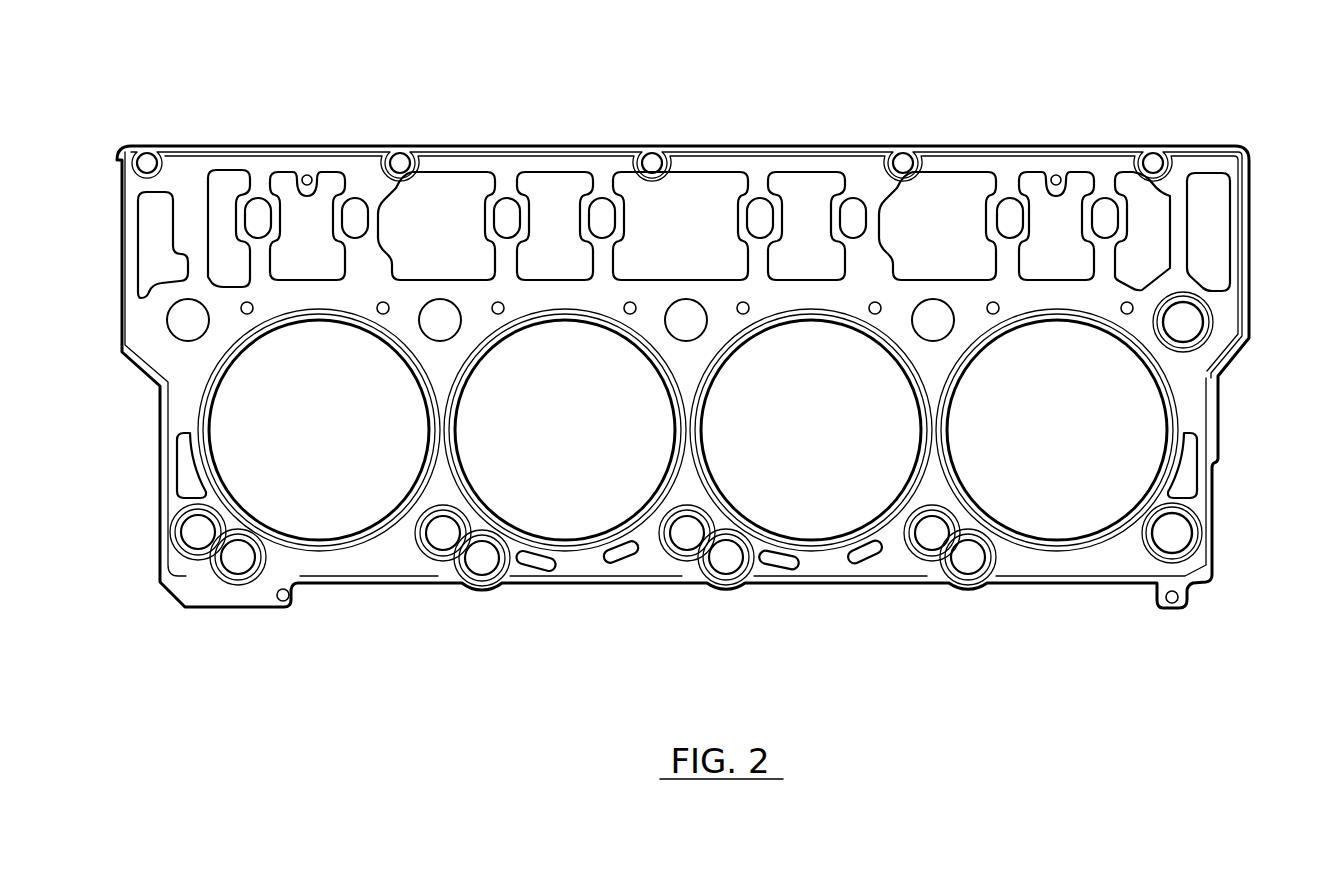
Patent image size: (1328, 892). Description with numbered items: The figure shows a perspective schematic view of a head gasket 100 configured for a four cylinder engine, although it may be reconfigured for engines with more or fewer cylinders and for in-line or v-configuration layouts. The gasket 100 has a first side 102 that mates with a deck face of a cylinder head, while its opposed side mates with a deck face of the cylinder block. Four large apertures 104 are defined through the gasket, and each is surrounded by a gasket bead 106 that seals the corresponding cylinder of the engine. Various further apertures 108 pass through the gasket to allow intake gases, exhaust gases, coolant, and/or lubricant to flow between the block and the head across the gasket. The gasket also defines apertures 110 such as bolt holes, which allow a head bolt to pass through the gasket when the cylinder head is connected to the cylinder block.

The head gasket 100 is at (971, 78).
The first side 102 is at (1178, 378).
The apertures 104 is at (320, 515).
The gasket beads 106 is at (821, 545).
The apertures 108 is at (563, 172).
The apertures 110 is at (1203, 323).